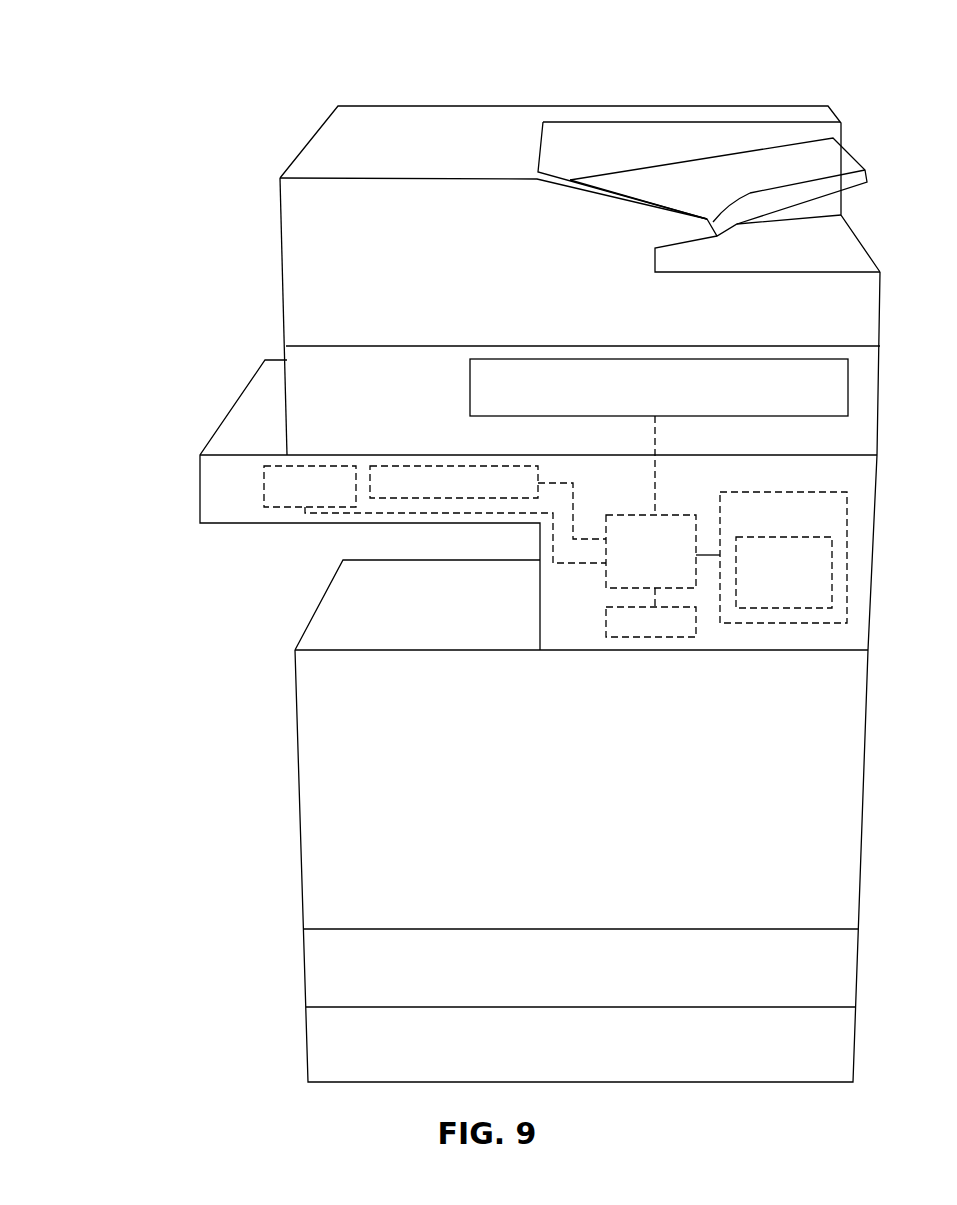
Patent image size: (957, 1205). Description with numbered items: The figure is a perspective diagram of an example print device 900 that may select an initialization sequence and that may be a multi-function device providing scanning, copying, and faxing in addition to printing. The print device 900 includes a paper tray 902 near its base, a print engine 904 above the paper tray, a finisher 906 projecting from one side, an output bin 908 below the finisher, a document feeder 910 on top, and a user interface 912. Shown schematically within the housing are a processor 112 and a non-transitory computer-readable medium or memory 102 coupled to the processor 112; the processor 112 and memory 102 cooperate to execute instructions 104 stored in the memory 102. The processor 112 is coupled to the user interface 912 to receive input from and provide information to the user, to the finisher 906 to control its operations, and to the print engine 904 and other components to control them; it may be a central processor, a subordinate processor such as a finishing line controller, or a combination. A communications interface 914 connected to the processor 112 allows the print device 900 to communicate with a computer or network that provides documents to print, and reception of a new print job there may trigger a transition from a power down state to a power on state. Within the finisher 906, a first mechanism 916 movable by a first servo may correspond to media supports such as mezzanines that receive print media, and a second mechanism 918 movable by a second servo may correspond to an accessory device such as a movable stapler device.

The print device 900 is at (165, 104).
The document feeder 910 is at (483, 274).
The user interface 912 is at (640, 402).
The finisher 906 is at (222, 492).
The second mechanism 918 is at (290, 499).
The first mechanism 916 is at (435, 494).
The processor 112 is at (630, 565).
The communications interface 914 is at (630, 635).
The memory 102 is at (763, 527).
The instructions 104 is at (764, 585).
The output bin 908 is at (296, 601).
The print engine 904 is at (562, 802).
The paper tray 902 is at (562, 980).